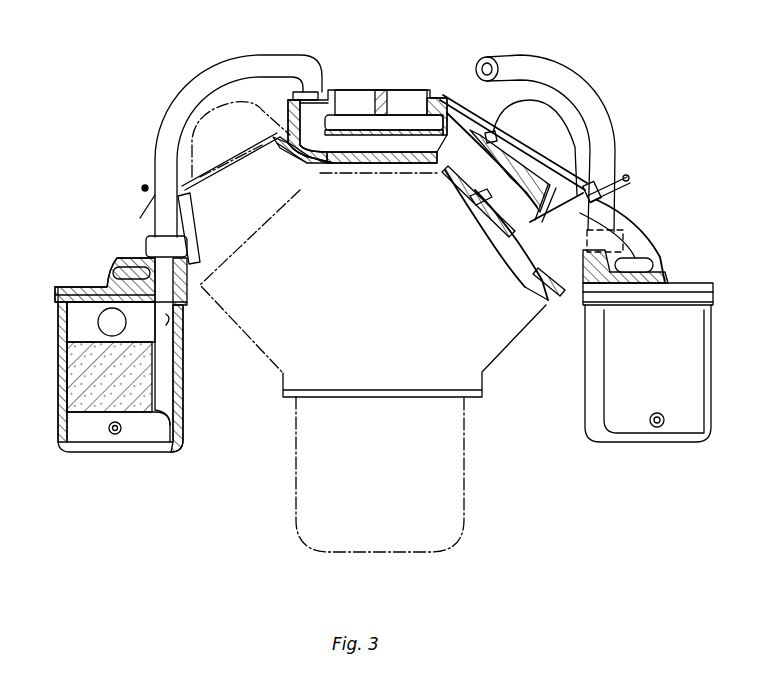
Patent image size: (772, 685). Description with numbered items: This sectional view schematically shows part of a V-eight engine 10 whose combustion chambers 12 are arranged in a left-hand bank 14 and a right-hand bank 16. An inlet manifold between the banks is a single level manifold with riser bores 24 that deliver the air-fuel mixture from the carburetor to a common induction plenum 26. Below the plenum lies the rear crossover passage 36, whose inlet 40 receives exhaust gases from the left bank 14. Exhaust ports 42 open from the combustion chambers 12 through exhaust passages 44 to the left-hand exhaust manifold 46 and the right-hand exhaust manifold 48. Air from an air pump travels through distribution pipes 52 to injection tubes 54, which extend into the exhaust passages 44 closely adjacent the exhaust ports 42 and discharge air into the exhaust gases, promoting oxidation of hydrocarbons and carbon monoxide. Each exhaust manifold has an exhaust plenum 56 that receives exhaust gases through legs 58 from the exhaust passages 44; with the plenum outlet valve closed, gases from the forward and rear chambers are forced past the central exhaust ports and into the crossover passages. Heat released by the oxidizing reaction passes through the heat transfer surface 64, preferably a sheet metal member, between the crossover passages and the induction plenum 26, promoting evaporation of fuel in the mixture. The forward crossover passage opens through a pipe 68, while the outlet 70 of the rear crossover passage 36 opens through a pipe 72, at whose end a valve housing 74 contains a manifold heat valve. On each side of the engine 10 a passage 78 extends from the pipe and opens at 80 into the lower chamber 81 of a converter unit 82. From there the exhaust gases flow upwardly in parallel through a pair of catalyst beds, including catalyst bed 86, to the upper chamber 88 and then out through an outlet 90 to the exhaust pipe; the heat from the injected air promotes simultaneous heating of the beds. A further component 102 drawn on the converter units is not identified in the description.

The V-8 engine 10 is at (492, 366).
The combustion chambers 12 is at (540, 300).
The left-hand bank 14 is at (570, 135).
The right-hand bank 16 is at (192, 137).
The riser bores 24 is at (380, 90).
The common induction plenum 26 is at (405, 100).
The rear crossover passage 36 is at (378, 145).
The inlet 40 is at (452, 130).
The exhaust ports 42 is at (532, 248).
The exhaust passages 44 is at (500, 170).
The left-hand exhaust manifold 46 is at (665, 272).
The right-hand exhaust manifold 48 is at (112, 258).
The distribution pipes 52 is at (143, 186).
The injection tubes 54 is at (598, 188).
The exhaust plenum 56 is at (640, 262).
The legs 58 is at (630, 237).
The heat transfer surface 64 is at (360, 133).
The pipe 68 is at (575, 95).
The outlet 70 is at (308, 95).
The pipe 72 is at (250, 72).
The valve housing 74 is at (190, 242).
The passage 78 is at (172, 320).
The opening 80 is at (162, 445).
The lower chamber 81 is at (82, 428).
The converter unit 82 is at (590, 385).
The catalyst bed 86 is at (90, 375).
The upper chamber 88 is at (80, 318).
The outlet 90 is at (98, 325).
The drain plug 102 is at (665, 420).